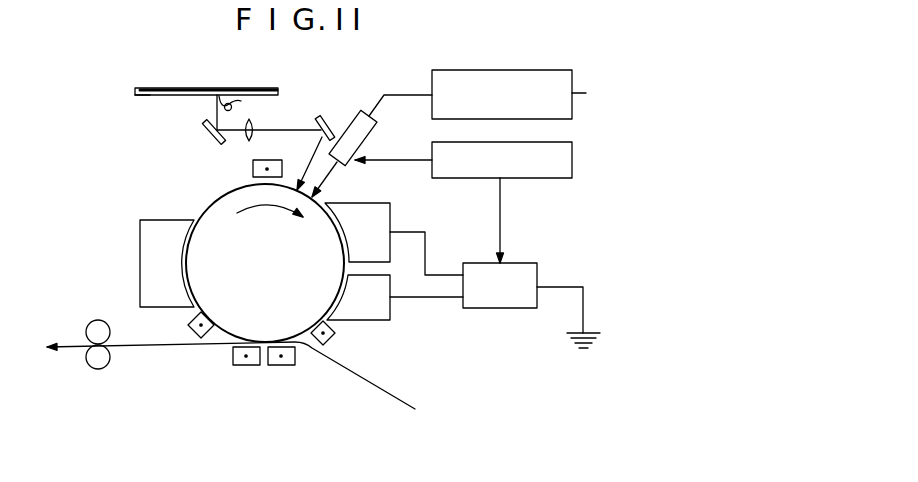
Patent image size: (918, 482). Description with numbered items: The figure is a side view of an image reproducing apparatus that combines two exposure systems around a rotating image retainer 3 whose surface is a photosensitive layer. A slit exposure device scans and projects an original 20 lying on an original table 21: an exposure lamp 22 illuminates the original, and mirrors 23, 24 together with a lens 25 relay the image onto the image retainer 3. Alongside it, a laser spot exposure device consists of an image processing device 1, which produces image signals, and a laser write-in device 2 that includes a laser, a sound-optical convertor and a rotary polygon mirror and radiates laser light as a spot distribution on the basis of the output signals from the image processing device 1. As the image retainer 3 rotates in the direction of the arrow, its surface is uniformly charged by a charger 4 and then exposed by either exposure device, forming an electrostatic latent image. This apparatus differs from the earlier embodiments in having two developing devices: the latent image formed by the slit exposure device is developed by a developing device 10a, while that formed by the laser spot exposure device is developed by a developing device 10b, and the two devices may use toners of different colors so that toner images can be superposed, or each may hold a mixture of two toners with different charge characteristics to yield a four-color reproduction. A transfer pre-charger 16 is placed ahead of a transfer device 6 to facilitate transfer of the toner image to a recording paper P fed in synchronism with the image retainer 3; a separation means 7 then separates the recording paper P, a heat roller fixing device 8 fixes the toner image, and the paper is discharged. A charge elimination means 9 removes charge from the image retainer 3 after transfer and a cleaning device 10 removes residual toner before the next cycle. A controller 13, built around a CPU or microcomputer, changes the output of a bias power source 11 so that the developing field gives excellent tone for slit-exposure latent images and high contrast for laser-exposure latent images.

The image processing device 1 is at (570, 70).
The laser write-in device 2 is at (378, 124).
The image retainer 3 is at (208, 205).
The charger 4 is at (253, 167).
The transfer device 6 is at (283, 366).
The separation means 7 is at (247, 366).
The heat roller fixing device 8 is at (97, 320).
The charge elimination means 9 is at (188, 327).
The cleaning device 10 is at (140, 250).
The developing device 10a is at (380, 203).
The developing device 10b is at (388, 321).
The bias power source 11 is at (525, 263).
The controller 13 is at (566, 142).
The transfer pre-charger 16 is at (338, 341).
The original 20 is at (160, 88).
The original table 21 is at (141, 96).
The exposure lamp 22 is at (248, 88).
The mirror 23 is at (208, 141).
The mirror 24 is at (325, 118).
The lens 25 is at (254, 124).
The recording paper P is at (345, 369).